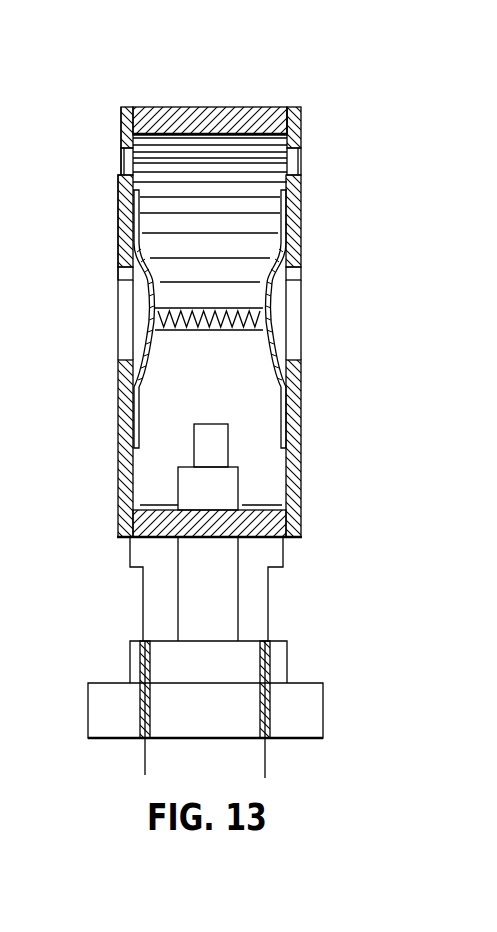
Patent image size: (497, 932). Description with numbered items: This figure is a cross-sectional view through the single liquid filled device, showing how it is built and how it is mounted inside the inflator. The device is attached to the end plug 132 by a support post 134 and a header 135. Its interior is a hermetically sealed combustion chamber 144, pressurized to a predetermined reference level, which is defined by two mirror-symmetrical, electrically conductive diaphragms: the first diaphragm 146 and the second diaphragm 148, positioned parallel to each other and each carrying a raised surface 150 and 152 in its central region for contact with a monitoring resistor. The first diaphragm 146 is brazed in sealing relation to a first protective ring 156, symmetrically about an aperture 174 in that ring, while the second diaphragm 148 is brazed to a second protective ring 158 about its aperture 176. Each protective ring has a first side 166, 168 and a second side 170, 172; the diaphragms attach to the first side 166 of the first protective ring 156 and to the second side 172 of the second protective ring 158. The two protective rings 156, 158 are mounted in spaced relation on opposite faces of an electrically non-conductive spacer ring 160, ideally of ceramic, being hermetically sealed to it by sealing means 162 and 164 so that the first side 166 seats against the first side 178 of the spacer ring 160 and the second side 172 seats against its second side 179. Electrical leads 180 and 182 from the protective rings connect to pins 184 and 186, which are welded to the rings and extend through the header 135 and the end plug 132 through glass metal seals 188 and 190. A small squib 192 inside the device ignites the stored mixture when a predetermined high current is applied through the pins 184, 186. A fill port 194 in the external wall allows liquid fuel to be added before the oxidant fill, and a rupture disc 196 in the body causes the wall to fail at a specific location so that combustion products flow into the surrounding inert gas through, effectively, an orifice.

The end plug 132 is at (115, 708).
The support post 134 is at (240, 565).
The header 135 is at (287, 663).
The combustion chamber 144 is at (135, 440).
The first diaphragm 146 is at (298, 264).
The second diaphragm 148 is at (131, 262).
The raised surface 150 is at (282, 292).
The raised surface 152 is at (157, 292).
The first protective ring 156 is at (292, 443).
The second protective ring 158 is at (120, 400).
The spacer ring 160 is at (236, 108).
The sealing means 162 is at (287, 107).
The sealing means 164 is at (128, 108).
The first side of first protective ring 166 is at (277, 481).
The first side of second protective ring 168 is at (121, 133).
The second side of first protective ring 170 is at (303, 170).
The second side of second protective ring 172 is at (140, 290).
The aperture 174 is at (290, 358).
The aperture 176 is at (121, 352).
The first side of spacer ring 178 is at (302, 108).
The second side of spacer ring 179 is at (119, 115).
The electrical lead 180 is at (270, 595).
The electrical lead 182 is at (143, 588).
The pin 184 is at (267, 758).
The pin 186 is at (144, 764).
The glass metal seal 188 is at (282, 638).
The glass metal seal 190 is at (133, 653).
The squib 192 is at (205, 422).
The fill port 194 is at (303, 150).
The rupture disc 196 is at (121, 164).